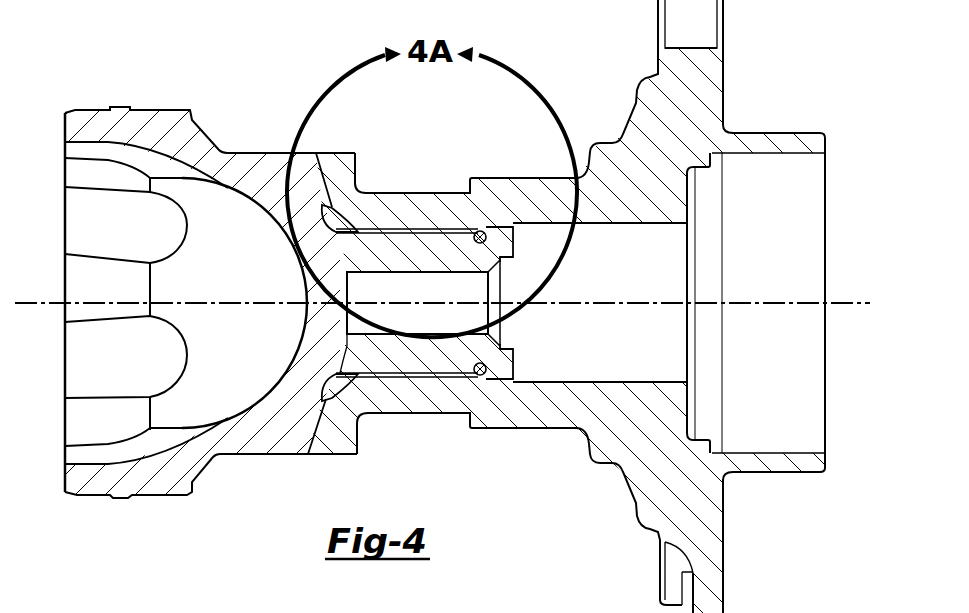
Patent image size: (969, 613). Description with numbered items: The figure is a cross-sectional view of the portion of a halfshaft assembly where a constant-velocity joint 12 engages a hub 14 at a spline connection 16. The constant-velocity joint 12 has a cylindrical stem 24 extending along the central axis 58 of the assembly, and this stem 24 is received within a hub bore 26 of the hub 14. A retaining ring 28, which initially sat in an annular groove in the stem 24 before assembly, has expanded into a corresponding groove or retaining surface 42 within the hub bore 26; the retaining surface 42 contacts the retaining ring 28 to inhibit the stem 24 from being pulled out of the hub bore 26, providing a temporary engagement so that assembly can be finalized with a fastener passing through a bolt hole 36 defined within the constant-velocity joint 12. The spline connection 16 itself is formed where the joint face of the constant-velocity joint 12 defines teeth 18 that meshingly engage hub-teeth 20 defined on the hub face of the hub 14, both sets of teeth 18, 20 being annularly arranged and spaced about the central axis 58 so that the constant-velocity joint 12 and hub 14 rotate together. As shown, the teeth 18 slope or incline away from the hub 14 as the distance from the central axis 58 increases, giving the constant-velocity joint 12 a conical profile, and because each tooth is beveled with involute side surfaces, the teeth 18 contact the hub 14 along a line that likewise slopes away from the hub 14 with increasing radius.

The constant-velocity joint 12 is at (169, 117).
The hub 14 is at (707, 100).
The spline connection 16 is at (317, 156).
The teeth 18 is at (281, 158).
The teeth 20 is at (337, 172).
The stem 24 is at (398, 365).
The hub bore 26 is at (662, 280).
The retaining ring 28 is at (487, 237).
The bolt hole 36 is at (472, 319).
The retaining surface 42 is at (474, 381).
The central axis 58 is at (37, 305).